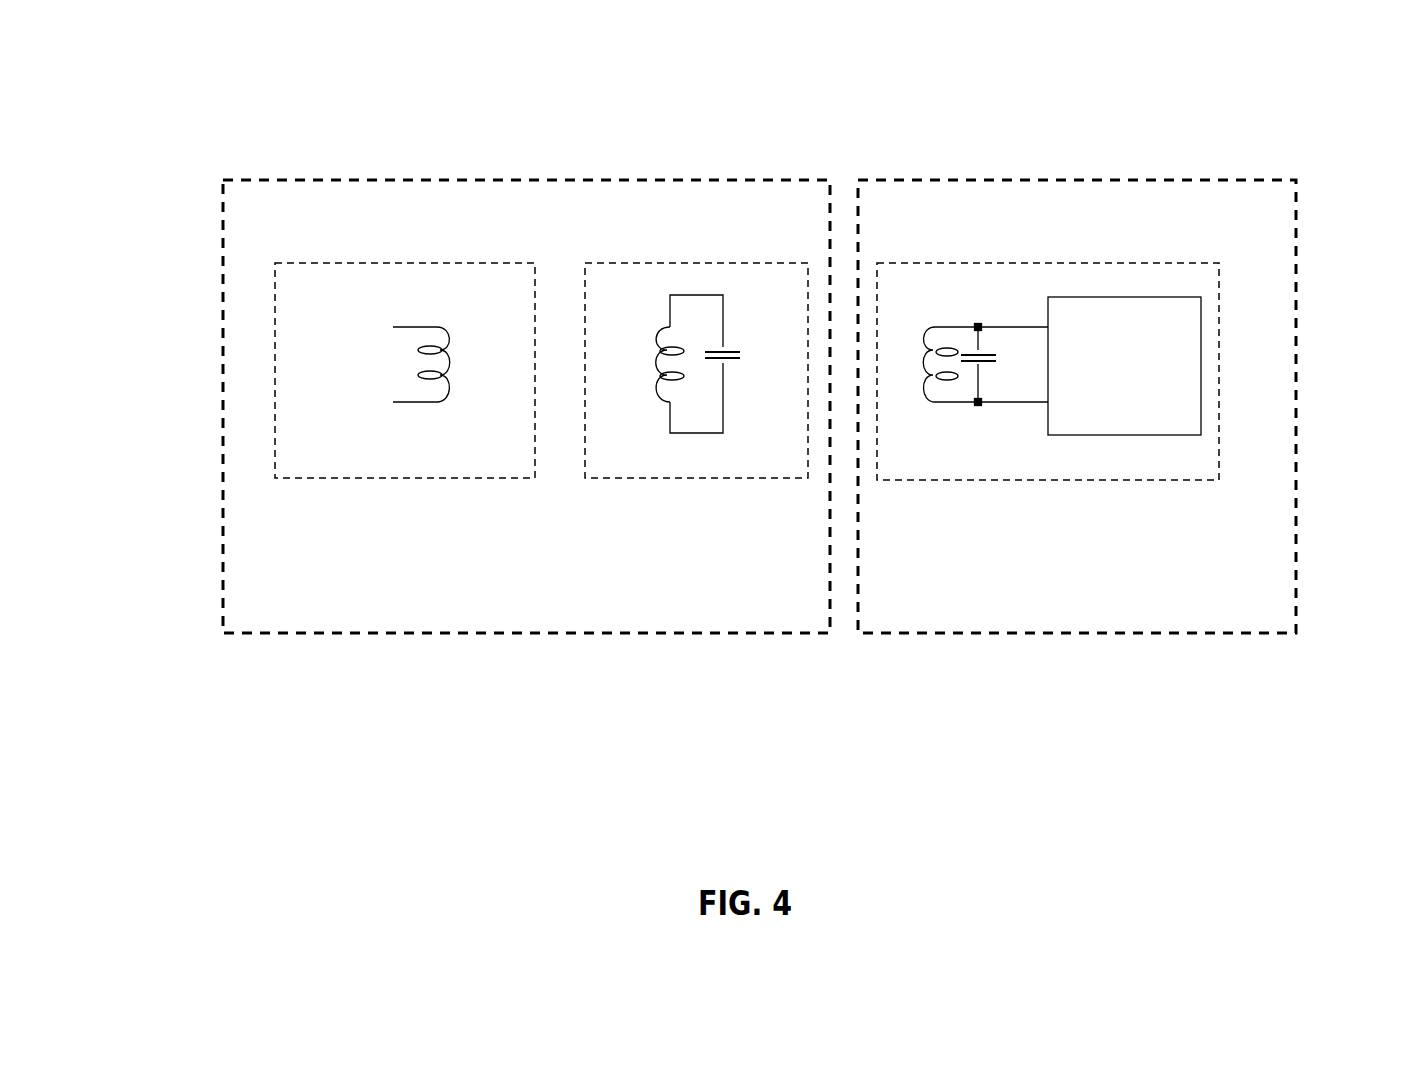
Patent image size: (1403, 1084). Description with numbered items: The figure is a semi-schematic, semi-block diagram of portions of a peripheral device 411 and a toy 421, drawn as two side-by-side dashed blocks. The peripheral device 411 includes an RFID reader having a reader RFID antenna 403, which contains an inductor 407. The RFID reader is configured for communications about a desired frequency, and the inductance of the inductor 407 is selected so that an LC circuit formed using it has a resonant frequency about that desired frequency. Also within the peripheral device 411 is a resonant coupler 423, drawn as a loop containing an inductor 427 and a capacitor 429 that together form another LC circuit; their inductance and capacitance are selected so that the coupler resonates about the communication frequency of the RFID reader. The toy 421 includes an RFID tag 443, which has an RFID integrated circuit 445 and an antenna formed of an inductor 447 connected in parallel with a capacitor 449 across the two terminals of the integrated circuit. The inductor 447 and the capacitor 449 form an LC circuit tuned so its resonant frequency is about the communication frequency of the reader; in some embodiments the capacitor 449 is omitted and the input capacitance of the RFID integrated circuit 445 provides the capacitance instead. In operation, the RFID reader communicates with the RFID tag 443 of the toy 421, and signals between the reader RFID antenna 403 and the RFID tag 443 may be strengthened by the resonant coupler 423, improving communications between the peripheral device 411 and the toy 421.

The reader RFID antenna 403 is at (383, 264).
The inductor 407 is at (448, 330).
The peripheral device 411 is at (664, 688).
The toy 421 is at (1128, 688).
The resonant coupler 423 is at (688, 264).
The inductor 427 is at (660, 326).
The capacitor 429 is at (743, 359).
The RFID tag 443 is at (1118, 264).
The RFID integrated circuit 445 is at (1210, 408).
The inductor 447 is at (930, 333).
The capacitor 449 is at (985, 352).